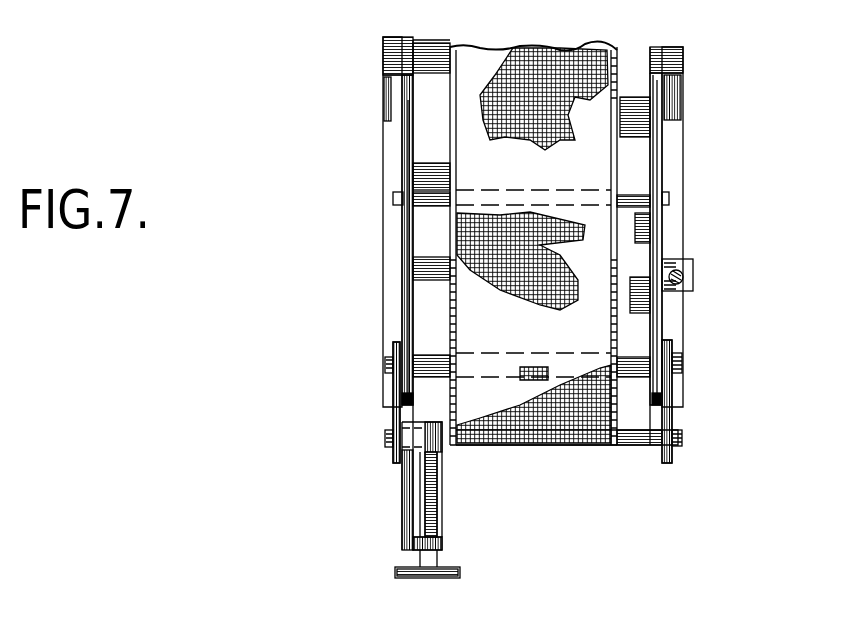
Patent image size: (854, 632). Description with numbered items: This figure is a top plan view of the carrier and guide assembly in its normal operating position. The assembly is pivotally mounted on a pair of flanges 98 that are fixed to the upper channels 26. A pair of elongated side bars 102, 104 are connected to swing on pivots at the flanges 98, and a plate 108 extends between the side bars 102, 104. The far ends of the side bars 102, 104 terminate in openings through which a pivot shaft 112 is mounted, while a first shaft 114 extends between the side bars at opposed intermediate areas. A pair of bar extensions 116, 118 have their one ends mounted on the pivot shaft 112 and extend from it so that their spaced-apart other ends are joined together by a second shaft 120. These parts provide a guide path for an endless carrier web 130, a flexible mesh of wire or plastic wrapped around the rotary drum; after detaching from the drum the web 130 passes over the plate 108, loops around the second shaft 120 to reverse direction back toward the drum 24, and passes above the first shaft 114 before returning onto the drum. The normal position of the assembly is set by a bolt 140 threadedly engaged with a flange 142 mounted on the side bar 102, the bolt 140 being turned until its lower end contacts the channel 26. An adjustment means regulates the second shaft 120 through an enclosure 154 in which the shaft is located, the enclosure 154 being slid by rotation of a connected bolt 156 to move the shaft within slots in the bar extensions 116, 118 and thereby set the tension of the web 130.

The drum 24 is at (660, 318).
The upper channel 26 is at (390, 137).
The flange 98 is at (395, 103).
The side bar 102 is at (660, 177).
The side bar 104 is at (408, 162).
The plate 108 is at (428, 277).
The pivot shaft 112 is at (435, 362).
The first shaft 114 is at (438, 195).
The bar extension 116 is at (668, 415).
The bar extension 118 is at (400, 413).
The second shaft 120 is at (640, 445).
The endless carrier web 130 is at (498, 68).
The bolt 140 is at (692, 278).
The flange 142 is at (685, 265).
The enclosure 154 is at (433, 453).
The bolt 156 is at (462, 572).